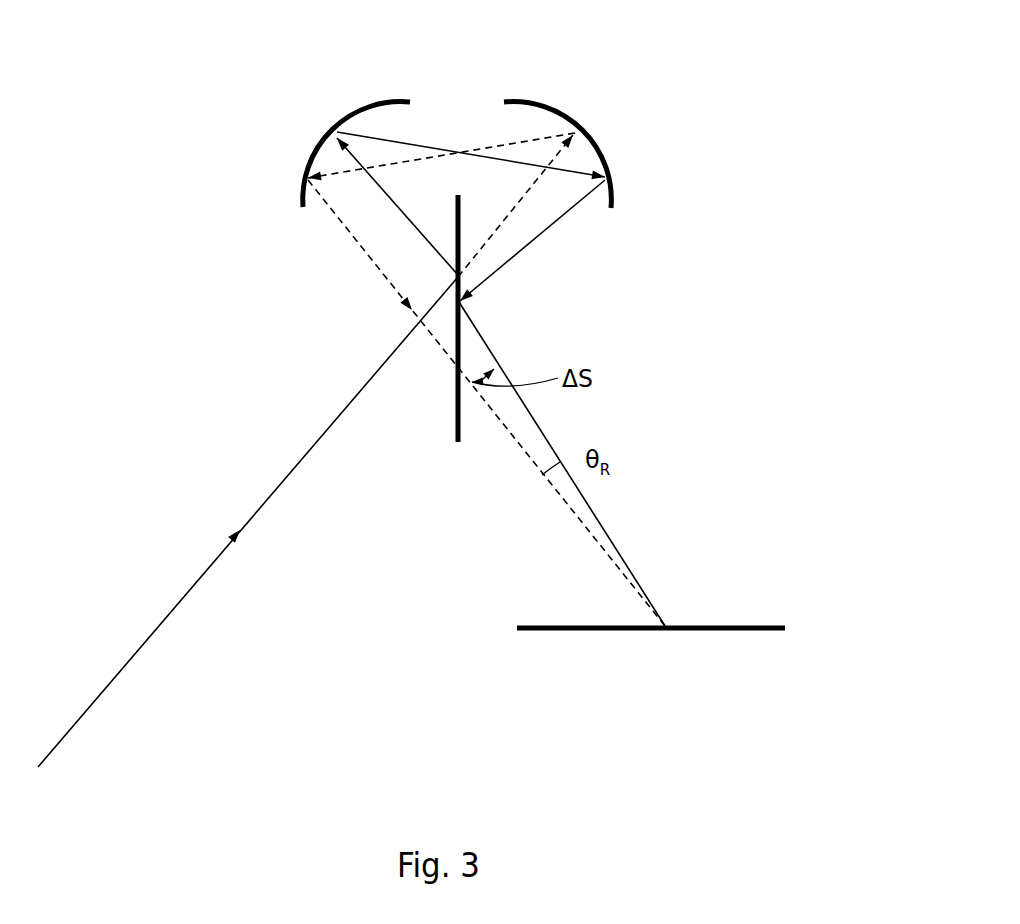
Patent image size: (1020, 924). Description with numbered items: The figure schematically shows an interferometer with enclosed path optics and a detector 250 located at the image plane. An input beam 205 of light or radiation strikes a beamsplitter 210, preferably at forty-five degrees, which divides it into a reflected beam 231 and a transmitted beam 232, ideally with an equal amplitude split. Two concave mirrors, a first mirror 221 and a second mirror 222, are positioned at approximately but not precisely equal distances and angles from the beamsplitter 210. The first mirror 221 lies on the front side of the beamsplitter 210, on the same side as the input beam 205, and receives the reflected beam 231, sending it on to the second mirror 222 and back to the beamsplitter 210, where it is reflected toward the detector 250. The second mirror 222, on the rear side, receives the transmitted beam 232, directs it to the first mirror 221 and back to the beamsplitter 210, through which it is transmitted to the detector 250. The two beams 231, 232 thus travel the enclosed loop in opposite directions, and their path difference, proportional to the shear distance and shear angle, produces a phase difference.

The input beam 205 is at (140, 648).
The beamsplitter 210 is at (455, 428).
The first mirror 221 is at (328, 135).
The second mirror 222 is at (555, 110).
The reflected beam 231 is at (402, 213).
The transmitted beam 232 is at (498, 228).
The detector 250 is at (740, 626).